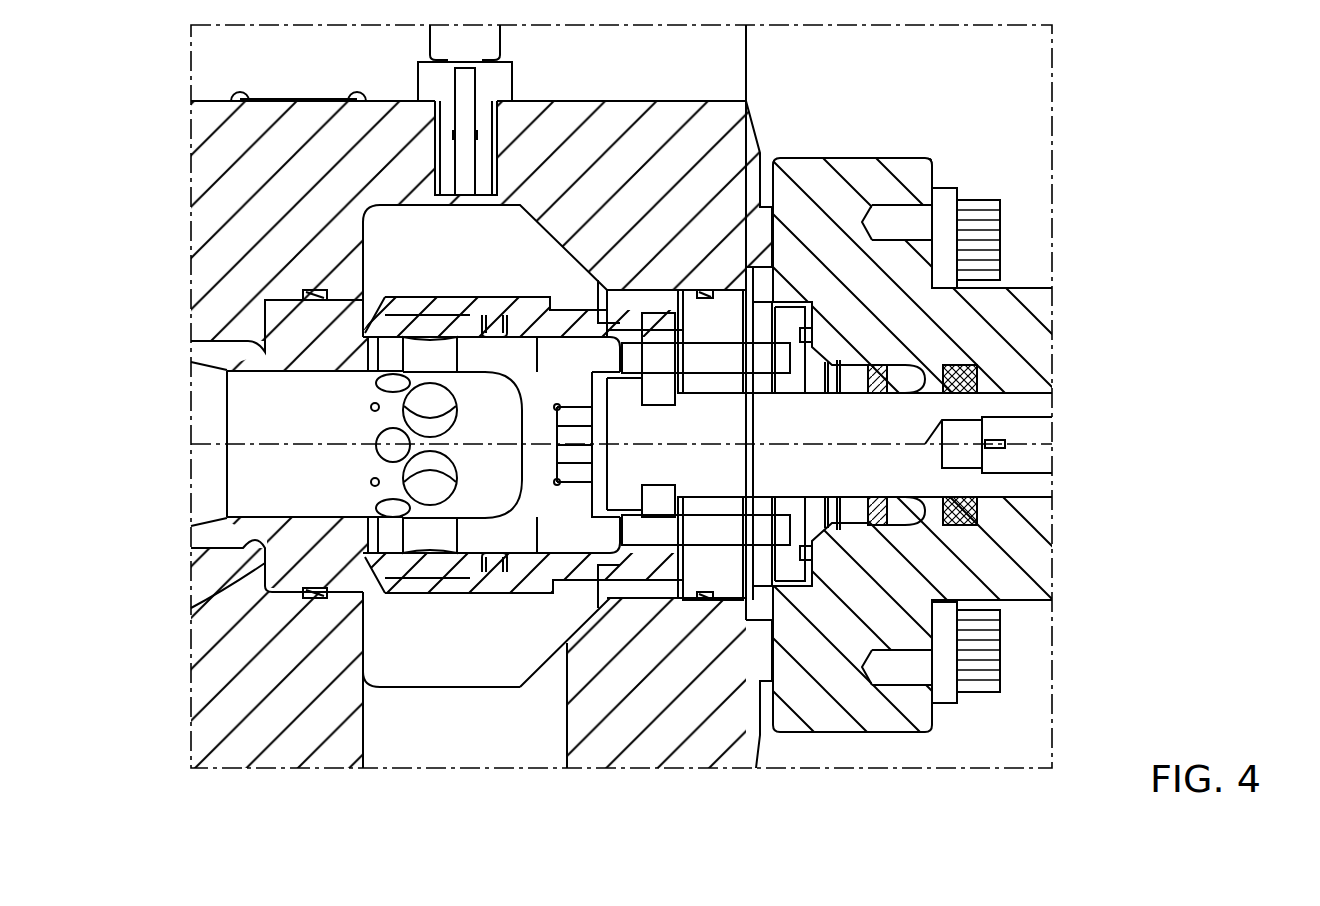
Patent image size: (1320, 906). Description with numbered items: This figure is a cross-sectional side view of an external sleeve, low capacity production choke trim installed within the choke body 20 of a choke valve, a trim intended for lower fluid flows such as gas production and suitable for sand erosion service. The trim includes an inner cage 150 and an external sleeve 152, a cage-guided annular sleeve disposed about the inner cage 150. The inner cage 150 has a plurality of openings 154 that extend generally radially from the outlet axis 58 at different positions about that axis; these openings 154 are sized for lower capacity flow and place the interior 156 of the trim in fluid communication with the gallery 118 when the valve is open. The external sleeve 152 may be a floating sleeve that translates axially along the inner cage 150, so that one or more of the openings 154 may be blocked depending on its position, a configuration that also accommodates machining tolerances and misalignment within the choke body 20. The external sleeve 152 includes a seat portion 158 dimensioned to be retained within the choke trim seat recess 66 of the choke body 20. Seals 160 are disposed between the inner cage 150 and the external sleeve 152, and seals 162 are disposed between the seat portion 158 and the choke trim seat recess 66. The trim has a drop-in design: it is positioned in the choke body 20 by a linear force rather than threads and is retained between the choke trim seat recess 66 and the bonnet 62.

The choke body 20 is at (218, 153).
The outlet axis 58 is at (327, 448).
The bonnet 62 is at (1018, 328).
The choke trim seat recess 66 is at (258, 574).
The gallery 118 is at (438, 630).
The inner cage 150 is at (538, 387).
The external sleeve 152 is at (432, 307).
The openings 154 is at (377, 452).
The interior 156 is at (289, 414).
The seat portion 158 is at (277, 347).
The seals 160 is at (493, 555).
The seals 162 is at (315, 297).